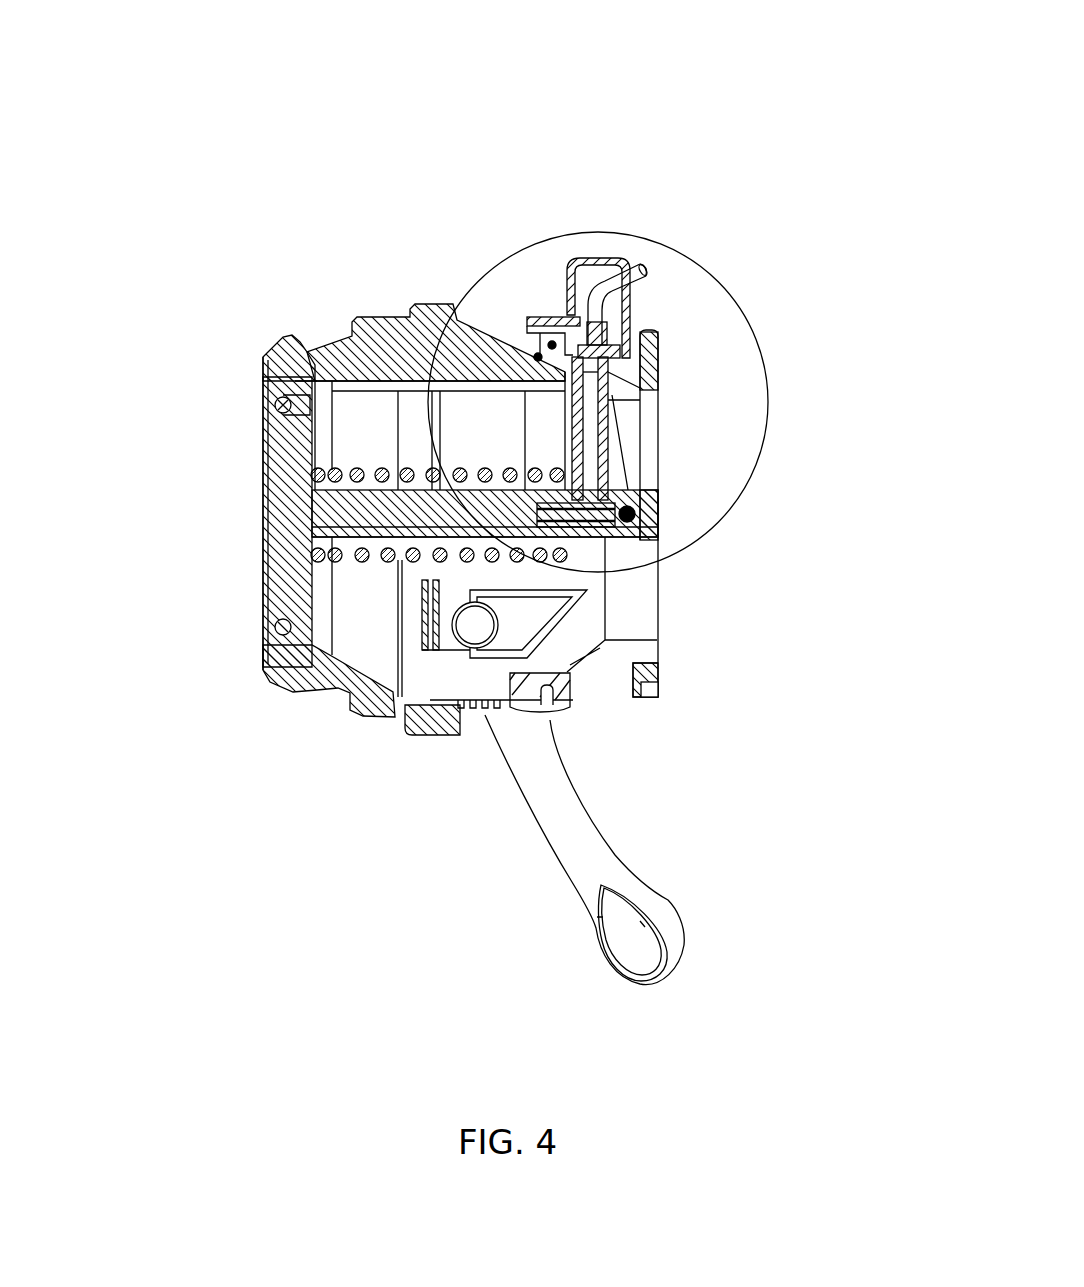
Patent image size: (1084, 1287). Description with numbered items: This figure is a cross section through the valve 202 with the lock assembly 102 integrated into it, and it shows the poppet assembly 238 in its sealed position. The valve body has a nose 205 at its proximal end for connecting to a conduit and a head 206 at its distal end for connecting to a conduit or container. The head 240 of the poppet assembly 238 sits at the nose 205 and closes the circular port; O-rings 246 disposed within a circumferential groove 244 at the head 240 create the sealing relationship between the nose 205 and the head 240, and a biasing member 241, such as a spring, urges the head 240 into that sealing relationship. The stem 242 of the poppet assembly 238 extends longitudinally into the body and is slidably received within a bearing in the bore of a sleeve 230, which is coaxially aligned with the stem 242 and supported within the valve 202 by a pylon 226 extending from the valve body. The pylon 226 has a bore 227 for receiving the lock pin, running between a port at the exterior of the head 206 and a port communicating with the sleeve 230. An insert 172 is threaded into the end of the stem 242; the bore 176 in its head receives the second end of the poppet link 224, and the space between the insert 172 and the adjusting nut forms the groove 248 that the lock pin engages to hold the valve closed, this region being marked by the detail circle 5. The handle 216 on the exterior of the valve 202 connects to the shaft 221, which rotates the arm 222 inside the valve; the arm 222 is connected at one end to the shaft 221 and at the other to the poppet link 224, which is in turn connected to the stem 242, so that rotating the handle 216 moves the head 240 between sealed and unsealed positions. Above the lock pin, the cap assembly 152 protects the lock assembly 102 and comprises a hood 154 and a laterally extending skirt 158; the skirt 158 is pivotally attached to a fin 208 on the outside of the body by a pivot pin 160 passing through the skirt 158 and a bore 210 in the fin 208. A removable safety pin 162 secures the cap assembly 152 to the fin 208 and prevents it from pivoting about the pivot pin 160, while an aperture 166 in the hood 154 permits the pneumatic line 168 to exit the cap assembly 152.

The lock assembly 102 is at (786, 287).
The cap assembly 152 is at (443, 82).
The hood 154 is at (600, 262).
The skirt 158 is at (552, 343).
The pivot pin 160 is at (560, 400).
The safety pin 162 is at (538, 355).
The aperture 166 is at (633, 258).
The pneumatic line 168 is at (650, 268).
The insert 172 is at (630, 516).
The bore 176 is at (612, 516).
The valve 202 is at (307, 286).
The nose 205 is at (282, 345).
The head 206 is at (597, 662).
The fin 208 is at (337, 370).
The bore 210 is at (558, 318).
The handle 216 is at (578, 878).
The shaft 221 is at (473, 627).
The arm 222 is at (442, 573).
The poppet link 224 is at (657, 498).
The pylon 226 is at (520, 345).
The bore 227 is at (657, 390).
The sleeve 230 is at (483, 478).
The poppet assembly 238 is at (193, 460).
The head 240 is at (265, 593).
The biasing member 241 is at (385, 560).
The stem 242 is at (340, 590).
The circumferential groove 244 is at (282, 408).
The O-rings 246 is at (277, 372).
The groove 248 is at (606, 516).
The detail circle 5 is at (722, 519).